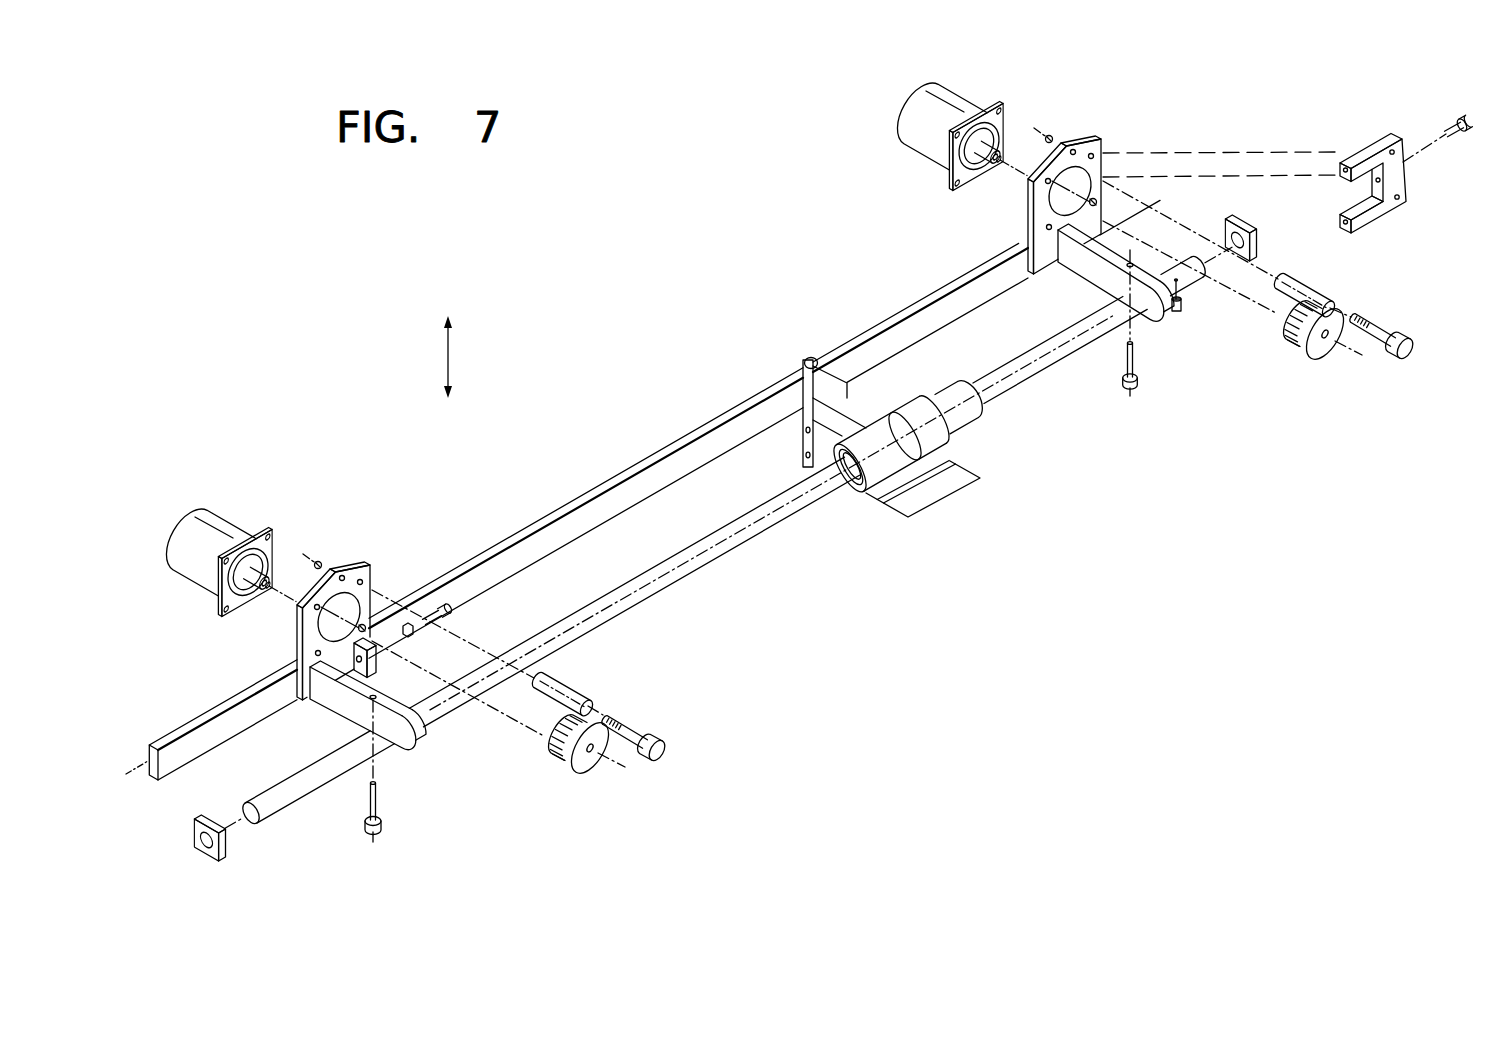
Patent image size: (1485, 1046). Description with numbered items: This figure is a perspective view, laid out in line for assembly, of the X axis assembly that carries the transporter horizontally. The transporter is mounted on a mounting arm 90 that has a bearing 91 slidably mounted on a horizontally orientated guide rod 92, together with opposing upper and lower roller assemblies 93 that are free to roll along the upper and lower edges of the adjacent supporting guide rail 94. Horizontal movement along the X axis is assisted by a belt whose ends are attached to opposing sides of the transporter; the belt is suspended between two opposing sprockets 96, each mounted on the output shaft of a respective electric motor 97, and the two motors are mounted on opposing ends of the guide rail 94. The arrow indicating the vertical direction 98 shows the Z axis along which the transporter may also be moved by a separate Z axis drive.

The mounting arm 90 is at (913, 495).
The bearing 91 is at (960, 416).
The guide rod 92 is at (695, 567).
The roller assemblies 93 is at (812, 352).
The guide rail 94 is at (661, 458).
The sprockets 96 is at (1297, 338).
The electric motor 97 is at (922, 137).
The vertical direction 98 is at (452, 354).